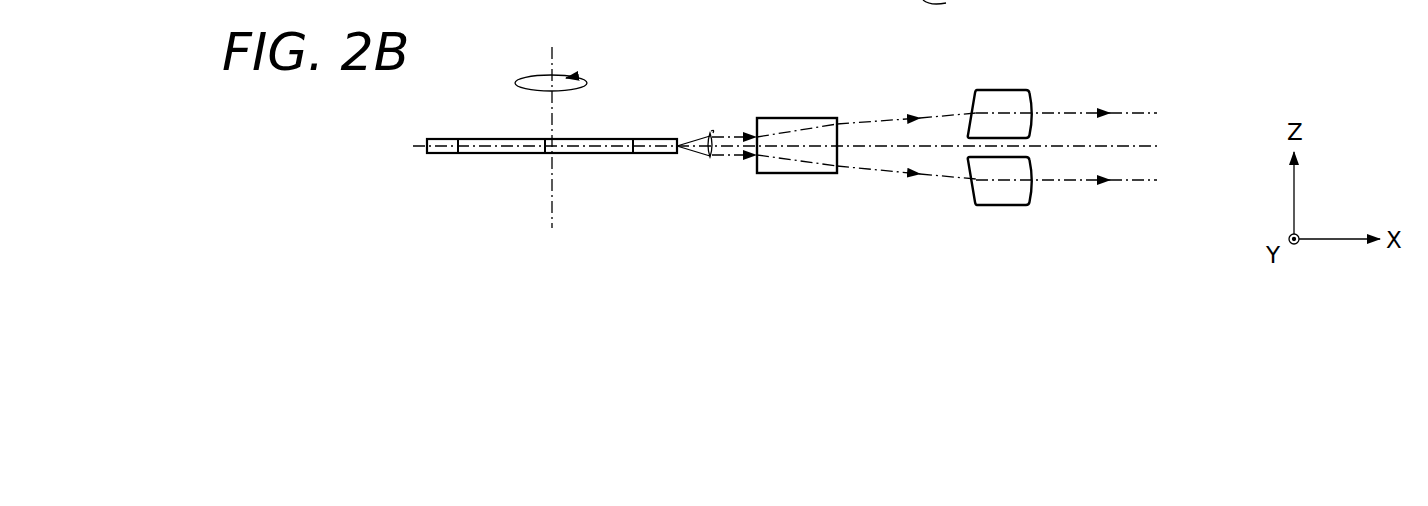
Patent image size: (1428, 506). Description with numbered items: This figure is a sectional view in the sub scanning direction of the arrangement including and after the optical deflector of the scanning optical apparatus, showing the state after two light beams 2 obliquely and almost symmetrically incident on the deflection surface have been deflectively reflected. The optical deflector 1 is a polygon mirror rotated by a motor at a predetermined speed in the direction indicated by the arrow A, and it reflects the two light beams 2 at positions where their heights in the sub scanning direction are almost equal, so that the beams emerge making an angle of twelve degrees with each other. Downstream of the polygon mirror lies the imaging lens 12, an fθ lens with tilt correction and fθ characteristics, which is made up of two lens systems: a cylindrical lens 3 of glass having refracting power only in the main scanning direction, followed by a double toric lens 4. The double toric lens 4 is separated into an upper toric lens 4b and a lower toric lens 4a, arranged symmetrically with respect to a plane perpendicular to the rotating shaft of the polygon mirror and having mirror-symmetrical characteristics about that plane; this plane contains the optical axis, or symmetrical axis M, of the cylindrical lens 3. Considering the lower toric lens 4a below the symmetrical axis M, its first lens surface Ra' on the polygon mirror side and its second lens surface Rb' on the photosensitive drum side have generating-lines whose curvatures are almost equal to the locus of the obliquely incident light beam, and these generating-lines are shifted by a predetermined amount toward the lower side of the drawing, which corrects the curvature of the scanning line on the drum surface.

The optical deflector 1 is at (599, 152).
The light beams 2 is at (712, 157).
The cylindrical lens 3 is at (802, 173).
The double toric lens 4 is at (1034, 209).
The toric lens 4a is at (1000, 222).
The toric lens 4b is at (1030, 128).
The imaging lens 12 is at (953, 232).
The rotation direction arrow A is at (580, 85).
The optical axis (symmetrical axis) M is at (1130, 143).
The first lens surface Ra' is at (928, 212).
The second lens surface Rb' is at (1033, 219).